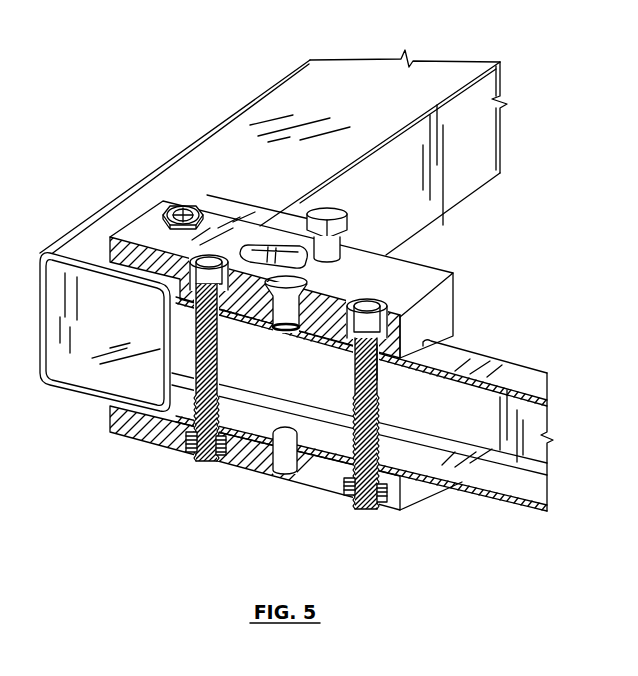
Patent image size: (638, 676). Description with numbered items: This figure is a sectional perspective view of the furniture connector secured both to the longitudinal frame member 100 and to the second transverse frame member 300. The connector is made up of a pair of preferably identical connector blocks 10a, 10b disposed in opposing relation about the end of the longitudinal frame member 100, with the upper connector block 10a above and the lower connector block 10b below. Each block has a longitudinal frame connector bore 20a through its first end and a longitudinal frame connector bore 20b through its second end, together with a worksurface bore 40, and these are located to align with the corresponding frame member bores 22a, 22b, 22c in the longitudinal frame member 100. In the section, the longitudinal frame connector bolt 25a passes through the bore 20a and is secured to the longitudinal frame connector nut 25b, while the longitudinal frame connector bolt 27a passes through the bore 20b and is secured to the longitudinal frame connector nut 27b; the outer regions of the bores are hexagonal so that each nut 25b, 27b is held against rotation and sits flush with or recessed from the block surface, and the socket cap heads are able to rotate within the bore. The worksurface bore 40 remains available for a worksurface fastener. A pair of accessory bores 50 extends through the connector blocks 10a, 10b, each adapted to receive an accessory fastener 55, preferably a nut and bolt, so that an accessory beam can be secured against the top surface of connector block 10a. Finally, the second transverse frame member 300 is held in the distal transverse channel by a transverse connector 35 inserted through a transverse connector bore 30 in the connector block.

The second transverse frame member 300 is at (86, 237).
The transverse connector 35 is at (178, 210).
The transverse connector bore 30 is at (193, 206).
The longitudinal frame connector bore 20b is at (223, 254).
The accessory fastener 55 is at (332, 211).
The accessory bore 50 is at (345, 245).
The longitudinal frame connector bolt 25a is at (369, 303).
The longitudinal frame connector bore 20a is at (446, 292).
The connector block 10a is at (446, 306).
The longitudinal frame member 100 is at (506, 372).
The frame member bore 22c is at (218, 314).
The frame member bore 22b is at (278, 336).
The frame member bore 22a is at (380, 357).
The longitudinal frame connector bolt 27a is at (202, 458).
The longitudinal frame connector nut 27b is at (221, 461).
The worksurface bore 40 is at (287, 460).
The connector block 10b is at (416, 485).
The longitudinal frame connector nut 25b is at (382, 505).